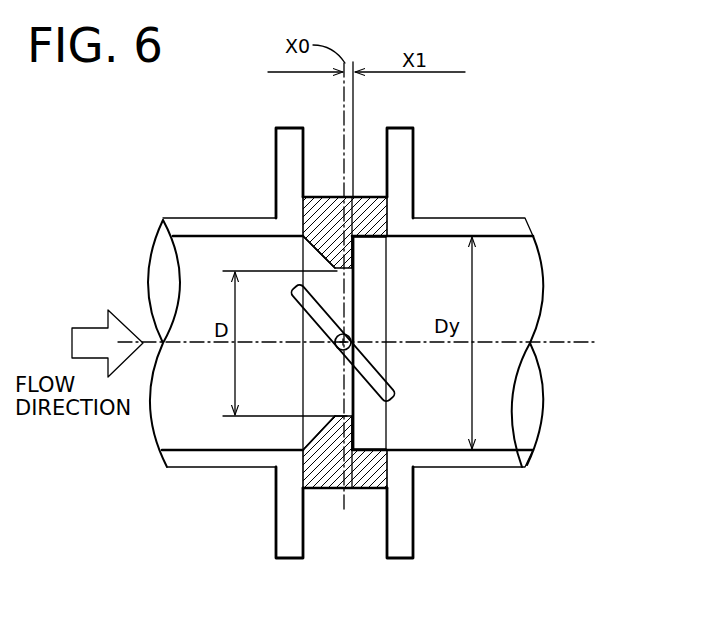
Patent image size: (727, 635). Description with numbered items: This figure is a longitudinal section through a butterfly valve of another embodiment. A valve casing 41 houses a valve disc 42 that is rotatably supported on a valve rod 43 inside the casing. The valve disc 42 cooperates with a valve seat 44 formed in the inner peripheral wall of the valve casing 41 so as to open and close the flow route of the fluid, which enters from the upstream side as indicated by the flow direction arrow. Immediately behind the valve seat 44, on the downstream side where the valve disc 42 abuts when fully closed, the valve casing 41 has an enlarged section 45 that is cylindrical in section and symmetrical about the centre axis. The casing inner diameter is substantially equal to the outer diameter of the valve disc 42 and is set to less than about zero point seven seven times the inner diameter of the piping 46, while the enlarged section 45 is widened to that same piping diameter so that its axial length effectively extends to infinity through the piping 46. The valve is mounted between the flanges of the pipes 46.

The valve casing 41 is at (359, 492).
The valve disc 42 is at (390, 403).
The valve rod 43 is at (351, 350).
The valve seat 44 is at (337, 413).
The enlarged section 45 is at (376, 278).
The piping 46 is at (276, 530).